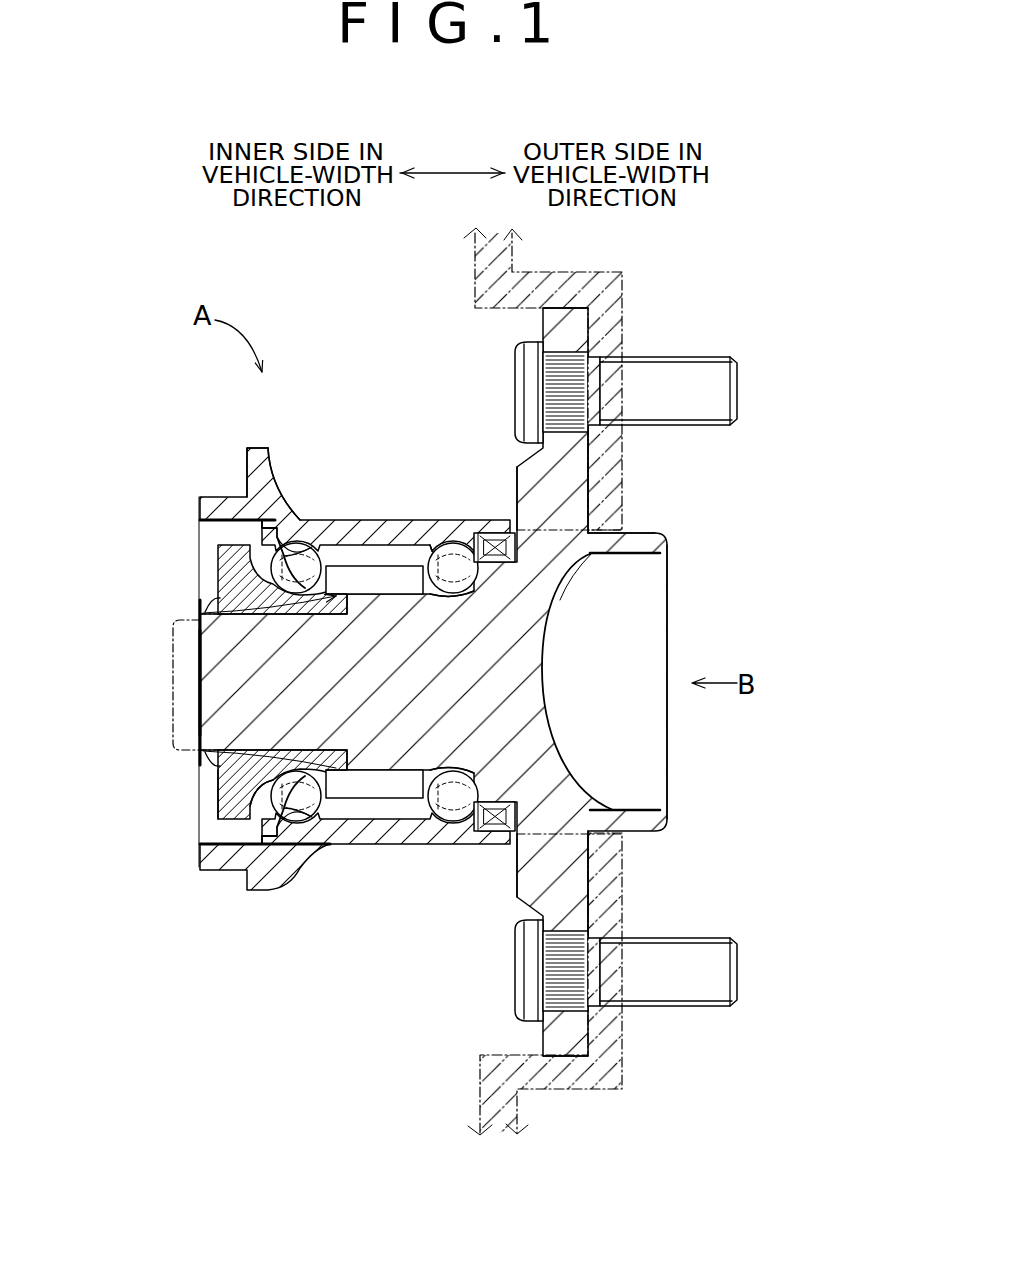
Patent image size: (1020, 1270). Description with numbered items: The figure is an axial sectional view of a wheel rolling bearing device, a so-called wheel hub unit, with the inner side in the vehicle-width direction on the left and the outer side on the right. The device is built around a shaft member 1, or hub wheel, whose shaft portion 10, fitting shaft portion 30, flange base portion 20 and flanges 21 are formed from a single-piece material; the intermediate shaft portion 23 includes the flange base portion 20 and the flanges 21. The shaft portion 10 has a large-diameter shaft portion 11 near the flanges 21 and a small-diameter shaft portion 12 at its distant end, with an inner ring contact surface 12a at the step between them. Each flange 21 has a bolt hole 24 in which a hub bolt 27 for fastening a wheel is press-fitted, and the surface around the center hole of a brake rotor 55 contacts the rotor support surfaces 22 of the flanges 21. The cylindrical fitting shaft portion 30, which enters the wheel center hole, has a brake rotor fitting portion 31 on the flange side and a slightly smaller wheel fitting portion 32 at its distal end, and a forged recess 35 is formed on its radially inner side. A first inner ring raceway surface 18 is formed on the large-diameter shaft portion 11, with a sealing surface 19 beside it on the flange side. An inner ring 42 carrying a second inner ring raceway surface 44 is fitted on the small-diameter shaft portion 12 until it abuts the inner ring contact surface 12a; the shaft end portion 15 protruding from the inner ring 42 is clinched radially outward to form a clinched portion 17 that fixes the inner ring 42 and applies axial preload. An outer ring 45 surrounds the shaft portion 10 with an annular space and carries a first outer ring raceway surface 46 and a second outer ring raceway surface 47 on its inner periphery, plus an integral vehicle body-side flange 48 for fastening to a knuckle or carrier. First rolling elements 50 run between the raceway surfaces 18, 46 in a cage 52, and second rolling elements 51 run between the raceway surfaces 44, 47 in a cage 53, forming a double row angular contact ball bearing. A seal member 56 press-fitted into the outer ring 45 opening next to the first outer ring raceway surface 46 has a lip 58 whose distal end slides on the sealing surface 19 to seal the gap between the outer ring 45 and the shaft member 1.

The shaft member 1 is at (368, 586).
The shaft portion 10 is at (385, 950).
The large-diameter shaft portion 11 is at (352, 782).
The small-diameter shaft portion 12 is at (293, 822).
The inner ring contact surface 12a is at (200, 658).
The shaft end portion 15 is at (178, 726).
The clinched portion 17 is at (205, 606).
The first inner ring raceway surface 18 is at (478, 828).
The sealing surface 19 is at (500, 578).
The flange base portion 20 is at (515, 466).
The flange 21 is at (578, 457).
The rotor support surface 22 is at (600, 480).
The intermediate shaft portion 23 is at (515, 510).
The bolt hole 24 is at (518, 350).
The hub bolt 27 is at (516, 388).
The fitting shaft portion 30 is at (745, 488).
The brake rotor fitting portion 31 is at (613, 512).
The wheel fitting portion 32 is at (648, 534).
The forged recess 35 is at (558, 622).
The inner ring 42 is at (230, 800).
The second inner ring raceway surface 44 is at (307, 766).
The outer ring 45 is at (381, 512).
The first outer ring raceway surface 46 is at (433, 530).
The second outer ring raceway surface 47 is at (287, 525).
The vehicle body-side flange 48 is at (248, 466).
The first rolling elements 50 is at (446, 544).
The second rolling elements 51 is at (292, 546).
The cage 52 is at (440, 770).
The cage 53 is at (342, 768).
The brake rotor 55 is at (628, 306).
The seal member 56 is at (472, 586).
The lip 58 is at (590, 563).